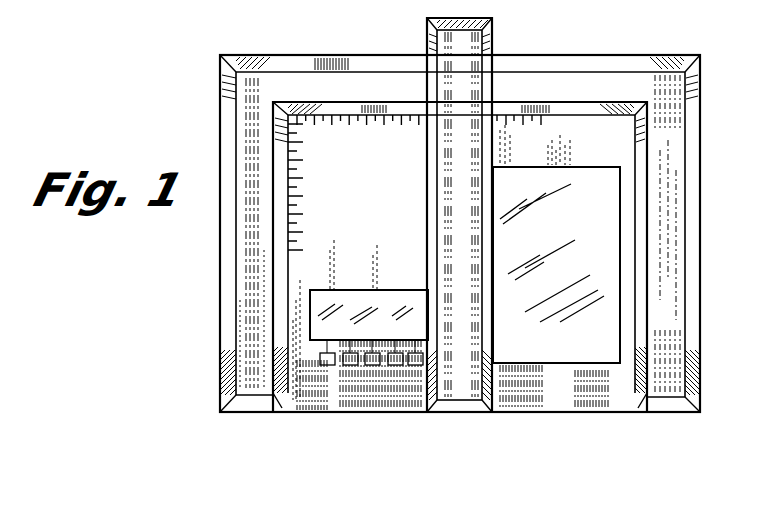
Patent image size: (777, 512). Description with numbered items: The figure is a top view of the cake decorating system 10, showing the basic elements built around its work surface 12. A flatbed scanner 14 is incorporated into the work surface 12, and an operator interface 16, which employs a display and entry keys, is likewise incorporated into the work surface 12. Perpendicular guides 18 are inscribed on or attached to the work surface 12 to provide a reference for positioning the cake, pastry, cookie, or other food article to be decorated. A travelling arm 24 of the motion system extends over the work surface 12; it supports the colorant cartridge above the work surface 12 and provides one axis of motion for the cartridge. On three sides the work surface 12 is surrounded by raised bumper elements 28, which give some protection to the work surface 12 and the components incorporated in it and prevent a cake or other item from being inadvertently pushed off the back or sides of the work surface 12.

The cake decorating system 10 is at (220, 412).
The work surface 12 is at (305, 413).
The flatbed scanner 14 is at (555, 350).
The operator interface 16 is at (403, 327).
The perpendicular guides 18 is at (323, 113).
The travelling arm 24 is at (466, 44).
The raised bumper elements 28 is at (250, 298).